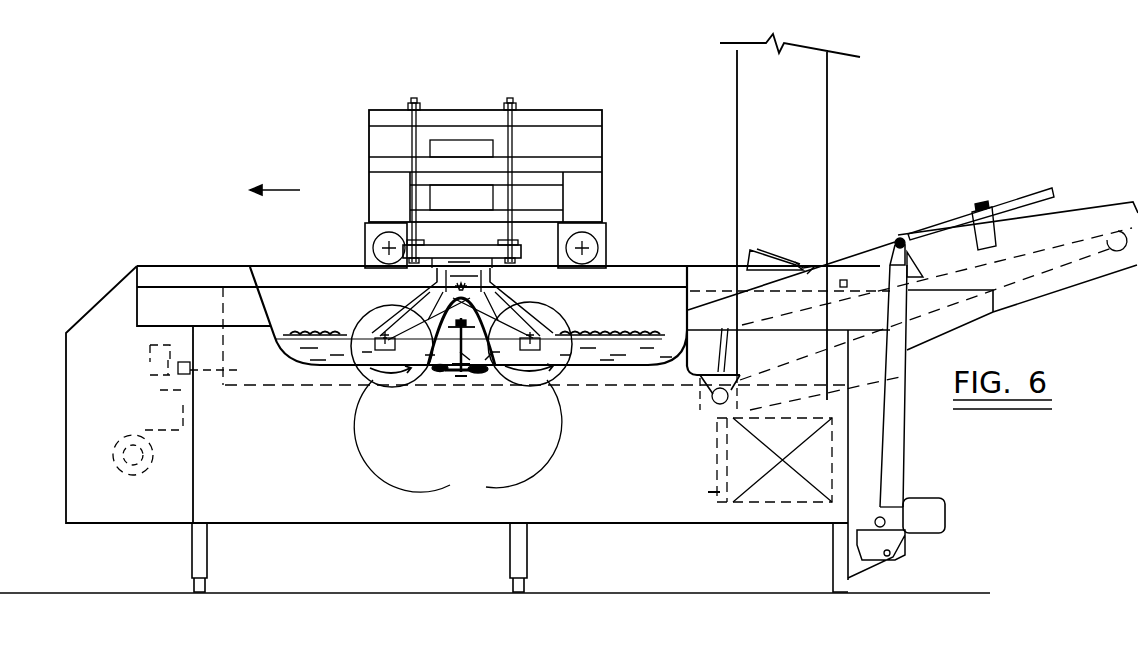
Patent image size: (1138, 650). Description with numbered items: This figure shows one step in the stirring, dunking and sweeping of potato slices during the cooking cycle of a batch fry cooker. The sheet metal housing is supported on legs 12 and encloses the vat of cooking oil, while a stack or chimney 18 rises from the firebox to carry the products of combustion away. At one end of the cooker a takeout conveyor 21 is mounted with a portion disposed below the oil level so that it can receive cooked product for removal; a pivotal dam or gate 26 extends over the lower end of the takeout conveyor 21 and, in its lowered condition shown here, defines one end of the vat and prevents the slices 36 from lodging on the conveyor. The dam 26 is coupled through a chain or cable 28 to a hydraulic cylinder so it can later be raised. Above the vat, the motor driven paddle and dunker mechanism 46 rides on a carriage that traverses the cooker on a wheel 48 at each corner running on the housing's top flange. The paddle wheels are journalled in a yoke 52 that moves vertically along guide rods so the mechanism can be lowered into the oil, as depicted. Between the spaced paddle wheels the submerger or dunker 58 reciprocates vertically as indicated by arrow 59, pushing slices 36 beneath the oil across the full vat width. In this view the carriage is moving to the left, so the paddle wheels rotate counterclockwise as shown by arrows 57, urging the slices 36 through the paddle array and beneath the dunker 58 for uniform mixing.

The legs 12 is at (528, 565).
The stack or chimney 18 is at (827, 138).
The takeout conveyor 21 is at (1062, 252).
The pivotal dam or gate 26 is at (780, 260).
The chain or cable 28 is at (945, 218).
The slices 36 is at (296, 330).
The paddle and dunker mechanism 46 is at (369, 135).
The wheel 48 is at (355, 237).
The yoke 52 is at (515, 292).
The arrow 57 is at (486, 487).
The submerger or dunker mechanism 58 is at (484, 372).
The arrow 59 is at (445, 374).